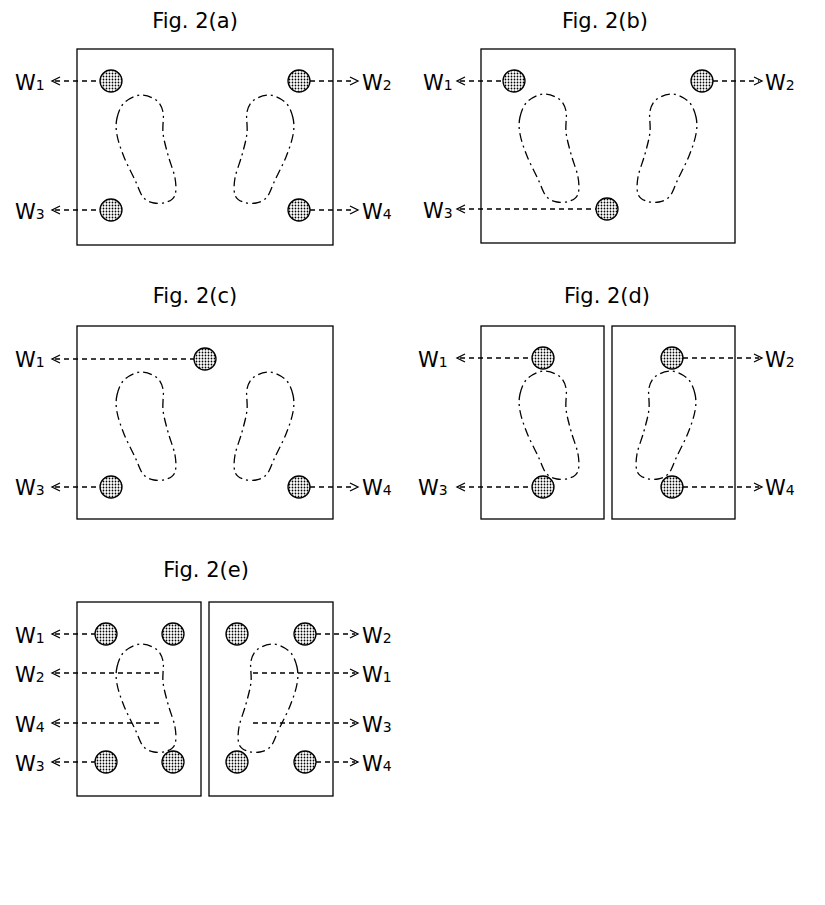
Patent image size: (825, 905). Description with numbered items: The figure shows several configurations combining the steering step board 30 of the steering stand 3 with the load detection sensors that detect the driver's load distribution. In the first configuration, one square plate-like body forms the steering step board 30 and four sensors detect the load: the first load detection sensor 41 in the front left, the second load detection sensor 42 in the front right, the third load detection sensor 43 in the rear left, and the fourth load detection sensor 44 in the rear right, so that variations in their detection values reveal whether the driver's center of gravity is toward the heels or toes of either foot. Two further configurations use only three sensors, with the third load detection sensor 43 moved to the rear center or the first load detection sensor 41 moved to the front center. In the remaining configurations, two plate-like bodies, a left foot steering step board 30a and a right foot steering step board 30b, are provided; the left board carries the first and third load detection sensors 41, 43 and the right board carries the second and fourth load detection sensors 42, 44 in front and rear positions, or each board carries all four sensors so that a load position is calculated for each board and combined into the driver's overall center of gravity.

In FIG. 2D, the steering stand 3 is at (608, 480).
In FIG. 2E, the steering stand 3 is at (206, 753).
In FIG. 2A, the steering step board 30 is at (110, 48).
In FIG. 2B, the steering step board 30 is at (705, 48).
In FIG. 2C, the steering step board 30 is at (110, 325).
In FIG. 2D, the left foot steering step board 30a is at (580, 520).
In FIG. 2E, the left foot steering step board 30a is at (172, 797).
In FIG. 2D, the right foot steering step board 30b is at (636, 520).
In FIG. 2E, the right foot steering step board 30b is at (238, 797).
In FIG. 2A, the first load detection sensor 41 is at (122, 78).
In FIG. 2B, the first load detection sensor 41 is at (525, 78).
In FIG. 2C, the first load detection sensor 41 is at (216, 353).
In FIG. 2D, the first load detection sensor 41 is at (543, 346).
In FIG. 2E, the first load detection sensor 41 is at (98, 625).
In FIG. 2A, the second load detection sensor 42 is at (288, 78).
In FIG. 2B, the second load detection sensor 42 is at (691, 79).
In FIG. 2D, the second load detection sensor 42 is at (672, 346).
In FIG. 2E, the second load detection sensor 42 is at (172, 622).
In FIG. 2A, the third load detection sensor 43 is at (120, 218).
In FIG. 2B, the third load detection sensor 43 is at (617, 216).
In FIG. 2C, the third load detection sensor 43 is at (120, 494).
In FIG. 2D, the third load detection sensor 43 is at (543, 499).
In FIG. 2E, the third load detection sensor 43 is at (102, 772).
In FIG. 2A, the fourth load detection sensor 44 is at (290, 216).
In FIG. 2C, the fourth load detection sensor 44 is at (290, 493).
In FIG. 2D, the fourth load detection sensor 44 is at (672, 499).
In FIG. 2E, the fourth load detection sensor 44 is at (170, 773).